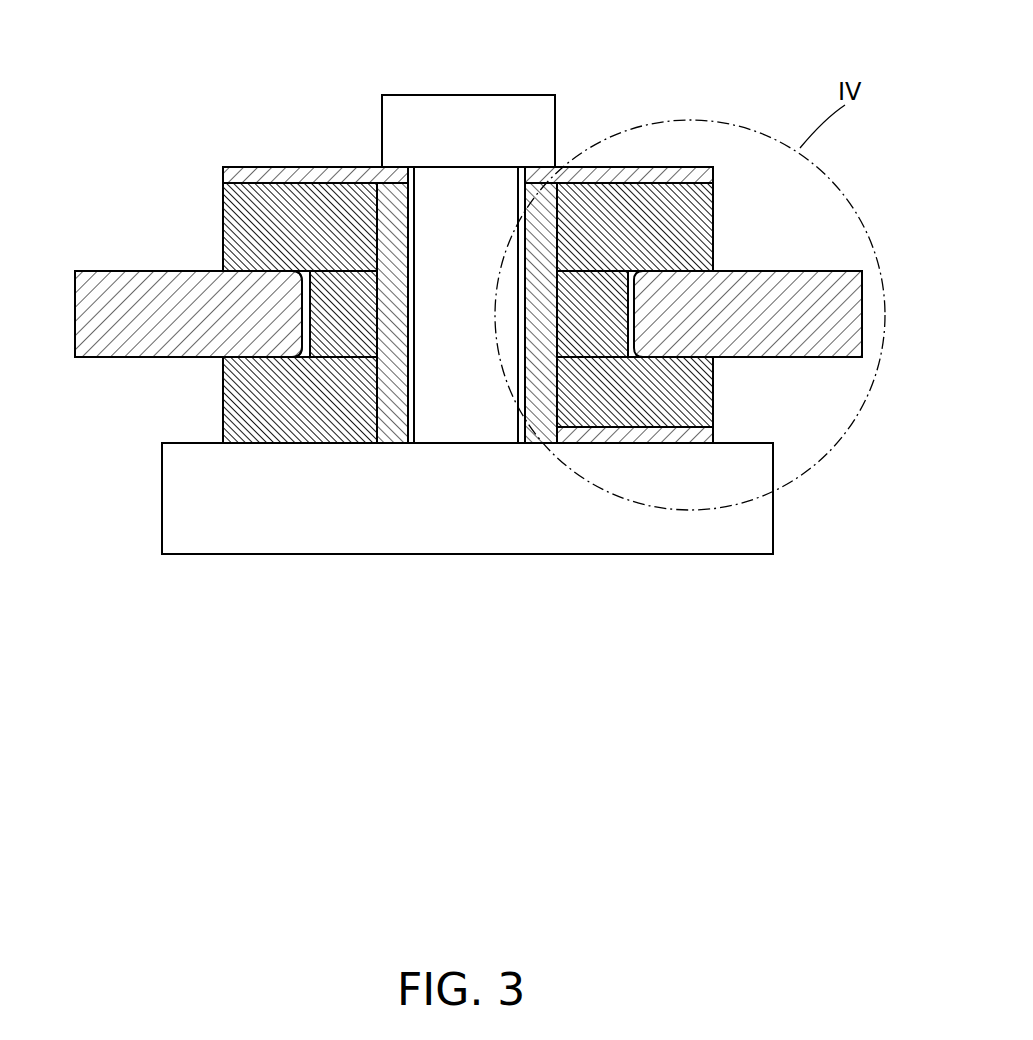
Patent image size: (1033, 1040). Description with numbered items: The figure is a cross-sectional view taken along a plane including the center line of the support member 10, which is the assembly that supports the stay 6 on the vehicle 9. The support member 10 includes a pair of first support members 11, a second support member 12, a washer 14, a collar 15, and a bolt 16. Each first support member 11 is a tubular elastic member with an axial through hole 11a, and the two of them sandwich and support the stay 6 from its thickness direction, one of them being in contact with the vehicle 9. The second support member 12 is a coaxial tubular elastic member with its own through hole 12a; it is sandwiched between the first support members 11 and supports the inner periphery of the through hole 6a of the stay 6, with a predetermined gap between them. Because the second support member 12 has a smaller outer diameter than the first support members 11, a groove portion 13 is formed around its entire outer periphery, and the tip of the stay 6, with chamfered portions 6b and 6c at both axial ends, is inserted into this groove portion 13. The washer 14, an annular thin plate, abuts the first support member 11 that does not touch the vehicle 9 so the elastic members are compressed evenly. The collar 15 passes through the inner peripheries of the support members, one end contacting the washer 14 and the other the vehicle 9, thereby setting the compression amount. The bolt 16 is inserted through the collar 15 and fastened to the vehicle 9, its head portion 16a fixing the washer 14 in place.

The stay 6 is at (107, 274).
The through hole 6a is at (302, 292).
The chamfered portion 6b is at (223, 236).
The chamfered portion 6c is at (224, 360).
The vehicle 9 is at (309, 535).
The support member 10 is at (745, 103).
The first support member 11 is at (713, 210).
The through hole 11a is at (616, 181).
The second support member 12 is at (636, 290).
The through hole 12a is at (713, 362).
The groove portion 13 is at (292, 338).
The washer 14 is at (277, 167).
The collar 15 is at (383, 167).
The bolt 16 is at (430, 94).
The head portion 16a is at (506, 113).